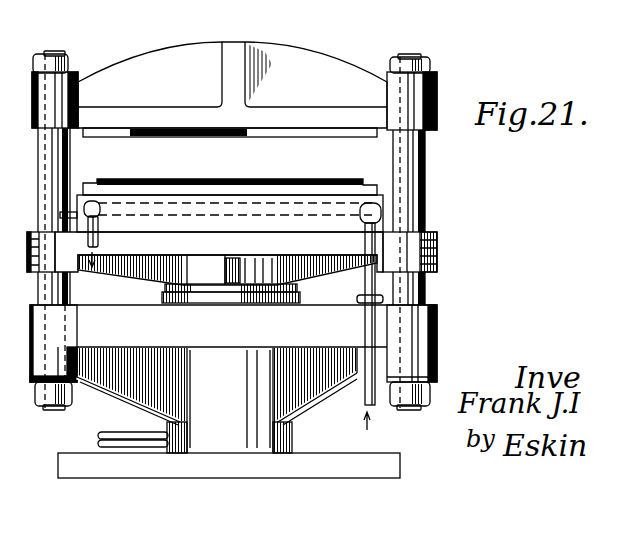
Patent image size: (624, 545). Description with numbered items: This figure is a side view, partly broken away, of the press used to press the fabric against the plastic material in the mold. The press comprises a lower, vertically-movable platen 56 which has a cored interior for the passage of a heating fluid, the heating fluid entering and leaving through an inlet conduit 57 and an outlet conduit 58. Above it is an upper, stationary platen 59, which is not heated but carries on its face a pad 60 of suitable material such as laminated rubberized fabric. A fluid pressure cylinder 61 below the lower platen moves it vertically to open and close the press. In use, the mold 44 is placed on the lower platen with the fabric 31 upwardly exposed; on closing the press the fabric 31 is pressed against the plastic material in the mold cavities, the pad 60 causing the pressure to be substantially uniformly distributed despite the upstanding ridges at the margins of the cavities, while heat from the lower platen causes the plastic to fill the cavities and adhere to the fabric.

The upper stationary platen 59 is at (155, 113).
The pad 60 is at (268, 130).
The fabric 31 is at (182, 183).
The lower vertically-movable platen 56 is at (138, 222).
The mold 44 is at (309, 192).
The outlet conduit 58 is at (100, 240).
The inlet conduit 57 is at (376, 284).
The fluid pressure cylinder 61 is at (220, 433).